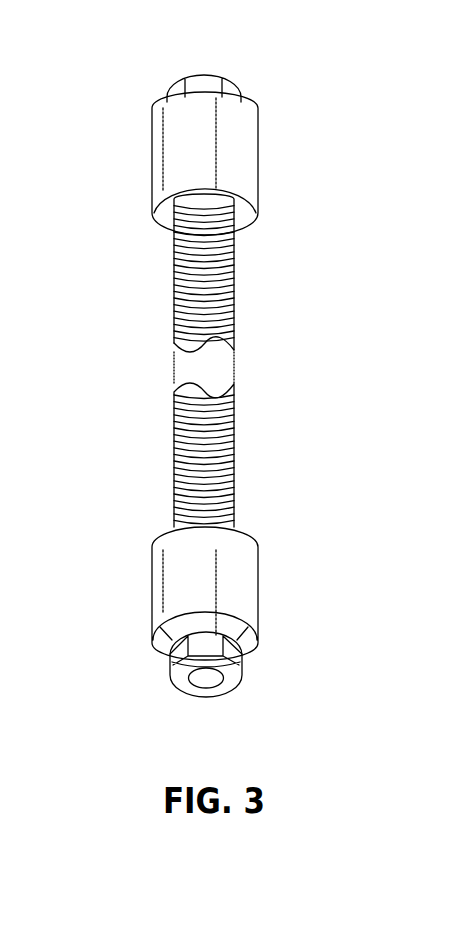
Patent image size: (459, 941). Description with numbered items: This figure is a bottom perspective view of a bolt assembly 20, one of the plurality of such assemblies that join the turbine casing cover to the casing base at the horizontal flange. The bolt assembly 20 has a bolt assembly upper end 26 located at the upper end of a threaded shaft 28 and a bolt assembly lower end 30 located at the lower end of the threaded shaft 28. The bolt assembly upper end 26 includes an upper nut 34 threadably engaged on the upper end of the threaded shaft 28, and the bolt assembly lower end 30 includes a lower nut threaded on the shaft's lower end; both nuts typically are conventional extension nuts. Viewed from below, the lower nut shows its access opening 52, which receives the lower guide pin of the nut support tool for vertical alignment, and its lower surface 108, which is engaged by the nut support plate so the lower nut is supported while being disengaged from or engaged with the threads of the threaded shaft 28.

The bolt assembly 20 is at (244, 453).
The bolt assembly upper end 26 is at (194, 148).
The threaded shaft 28 is at (175, 302).
The bolt assembly lower end 30 is at (168, 640).
The upper nut 34 is at (247, 163).
The access opening 52 is at (212, 686).
The lower surface 108 is at (172, 693).